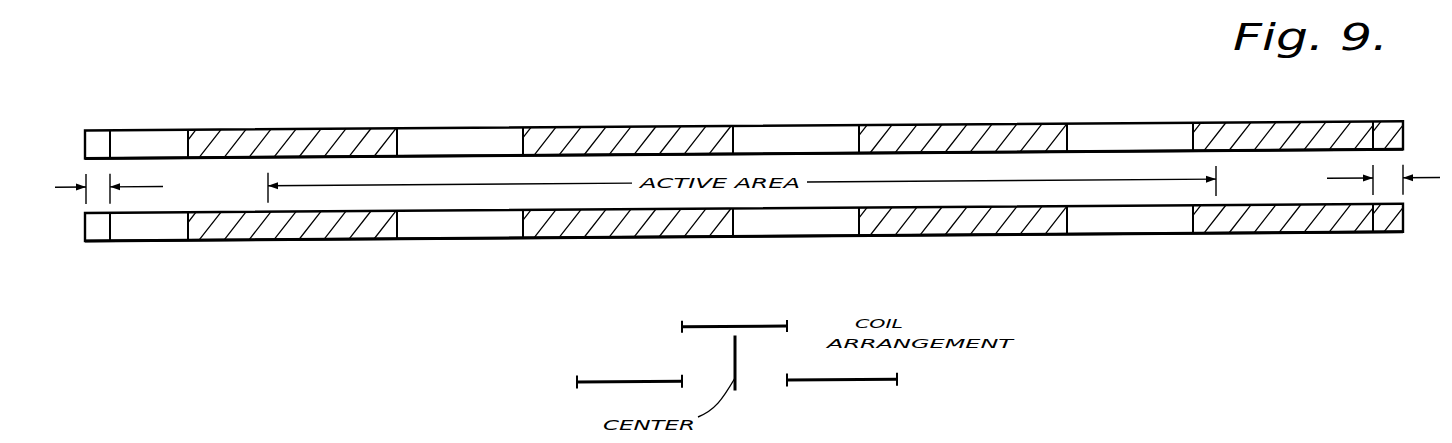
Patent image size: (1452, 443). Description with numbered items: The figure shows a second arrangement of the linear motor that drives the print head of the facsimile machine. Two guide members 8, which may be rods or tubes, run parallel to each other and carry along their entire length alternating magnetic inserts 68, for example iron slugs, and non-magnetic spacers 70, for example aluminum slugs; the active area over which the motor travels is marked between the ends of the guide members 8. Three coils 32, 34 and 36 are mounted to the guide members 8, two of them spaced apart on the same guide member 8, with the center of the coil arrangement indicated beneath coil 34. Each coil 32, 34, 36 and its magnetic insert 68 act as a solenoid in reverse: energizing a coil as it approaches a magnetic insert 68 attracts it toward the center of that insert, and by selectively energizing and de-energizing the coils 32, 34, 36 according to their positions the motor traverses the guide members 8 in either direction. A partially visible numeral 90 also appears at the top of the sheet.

The guide members 8 is at (85, 140).
The non-magnetic spacers 70 is at (162, 130).
The magnetic inserts 68 is at (302, 130).
The coil 32 is at (577, 380).
The coil 34 is at (682, 330).
The coil 36 is at (897, 380).
The indicator 90 is at (806, 0).